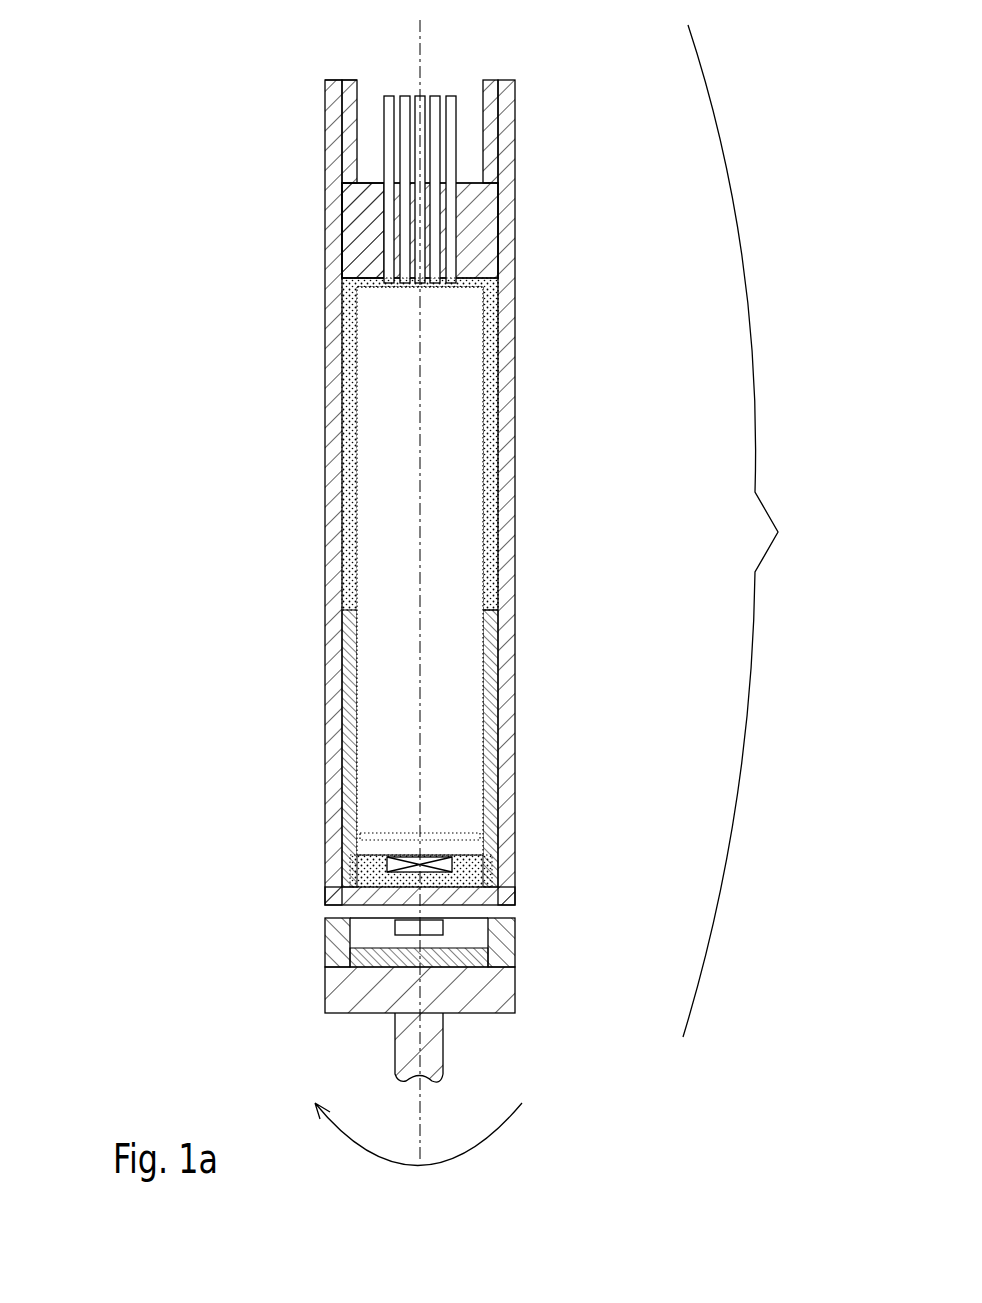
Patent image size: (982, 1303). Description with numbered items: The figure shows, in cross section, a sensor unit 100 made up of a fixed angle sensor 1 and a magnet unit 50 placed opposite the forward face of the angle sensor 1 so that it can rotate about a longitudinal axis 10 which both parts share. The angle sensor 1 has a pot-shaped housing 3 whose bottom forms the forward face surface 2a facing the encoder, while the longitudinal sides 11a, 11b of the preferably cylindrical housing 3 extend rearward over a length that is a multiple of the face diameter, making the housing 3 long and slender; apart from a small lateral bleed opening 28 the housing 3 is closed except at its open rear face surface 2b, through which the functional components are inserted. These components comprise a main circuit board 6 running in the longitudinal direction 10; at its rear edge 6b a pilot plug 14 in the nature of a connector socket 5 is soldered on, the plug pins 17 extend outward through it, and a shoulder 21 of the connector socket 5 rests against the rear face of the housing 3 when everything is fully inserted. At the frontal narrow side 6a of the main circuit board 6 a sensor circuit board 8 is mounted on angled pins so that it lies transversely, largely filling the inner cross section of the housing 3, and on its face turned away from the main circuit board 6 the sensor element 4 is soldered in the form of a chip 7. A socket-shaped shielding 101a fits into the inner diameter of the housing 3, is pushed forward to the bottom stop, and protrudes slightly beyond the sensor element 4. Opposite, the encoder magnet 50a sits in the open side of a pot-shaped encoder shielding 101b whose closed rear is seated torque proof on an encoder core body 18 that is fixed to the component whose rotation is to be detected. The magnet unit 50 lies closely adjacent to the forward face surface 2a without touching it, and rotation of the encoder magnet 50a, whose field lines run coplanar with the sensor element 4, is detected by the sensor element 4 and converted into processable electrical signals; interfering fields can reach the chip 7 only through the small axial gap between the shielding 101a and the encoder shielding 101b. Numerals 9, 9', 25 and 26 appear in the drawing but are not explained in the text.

The sensor unit 100 is at (473, 587).
The angle sensor 1 is at (188, 584).
The forward face surface 2a is at (480, 897).
The rear face surface 2b is at (515, 97).
The housing 3 is at (512, 330).
The sensor element 4 is at (245, 952).
The connector socket 5 is at (362, 220).
The main circuit board 6 is at (400, 338).
The frontal narrow side 6a is at (423, 833).
The rear edge 6b is at (463, 288).
The chip 7 is at (453, 857).
The sensor circuit board 8 is at (368, 847).
The insulating layer 9 is at (532, 448).
The bottom insulating layer 9' is at (466, 859).
The longitudinal axis 10 is at (420, 512).
The longitudinal side 11a is at (330, 733).
The longitudinal side 11b is at (505, 717).
The pilot plug 14 is at (420, 230).
The plug pins 17 is at (455, 150).
The encoder core body 18 is at (485, 1003).
The shoulder 21 is at (328, 82).
The cover block 25 is at (500, 240).
The outer wall layer 26 is at (508, 567).
The lateral bleed opening 28 is at (508, 365).
The magnet unit 50 is at (280, 1018).
The encoder magnet 50a is at (440, 926).
The shielding 101a is at (498, 650).
The encoder shielding 101b is at (510, 950).